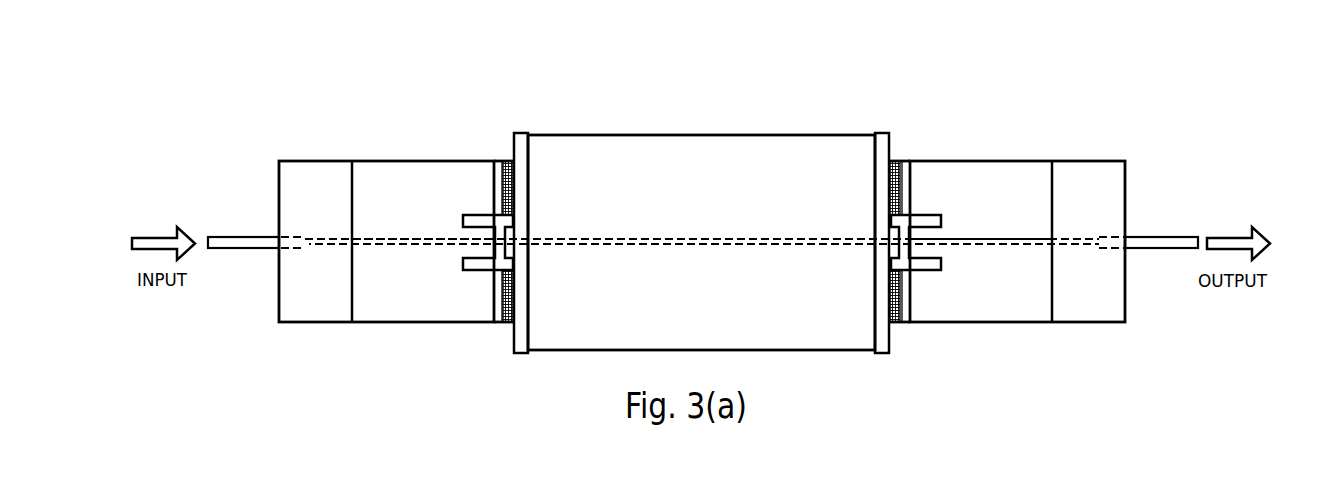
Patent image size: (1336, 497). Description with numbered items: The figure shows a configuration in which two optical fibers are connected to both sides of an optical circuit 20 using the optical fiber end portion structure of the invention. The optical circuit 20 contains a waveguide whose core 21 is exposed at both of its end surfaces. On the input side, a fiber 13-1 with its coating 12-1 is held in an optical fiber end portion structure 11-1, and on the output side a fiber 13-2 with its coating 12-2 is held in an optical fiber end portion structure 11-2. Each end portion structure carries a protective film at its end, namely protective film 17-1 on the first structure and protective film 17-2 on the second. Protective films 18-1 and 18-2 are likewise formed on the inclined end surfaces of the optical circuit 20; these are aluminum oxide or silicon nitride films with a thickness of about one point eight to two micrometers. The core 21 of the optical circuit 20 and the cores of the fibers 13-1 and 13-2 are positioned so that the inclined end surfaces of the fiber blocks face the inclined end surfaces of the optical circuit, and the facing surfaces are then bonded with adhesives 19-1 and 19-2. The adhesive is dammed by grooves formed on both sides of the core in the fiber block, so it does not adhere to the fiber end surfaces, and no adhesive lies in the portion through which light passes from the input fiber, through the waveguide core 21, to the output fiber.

The optical fiber end portion structure 11-1 is at (344, 128).
The optical fiber end portion structure 11-2 is at (1077, 128).
The coating 12-1 is at (253, 235).
The coating 12-2 is at (1170, 235).
The fiber 13-1 is at (413, 235).
The fiber 13-2 is at (1012, 235).
The protective film 17-1 is at (497, 325).
The protective film 17-2 is at (907, 325).
The protective film 18-1 is at (525, 138).
The protective film 18-2 is at (882, 138).
The adhesive 19-1 is at (512, 160).
The adhesive 19-2 is at (893, 160).
The optical circuit 20 is at (613, 134).
The core of waveguide 21 is at (698, 239).